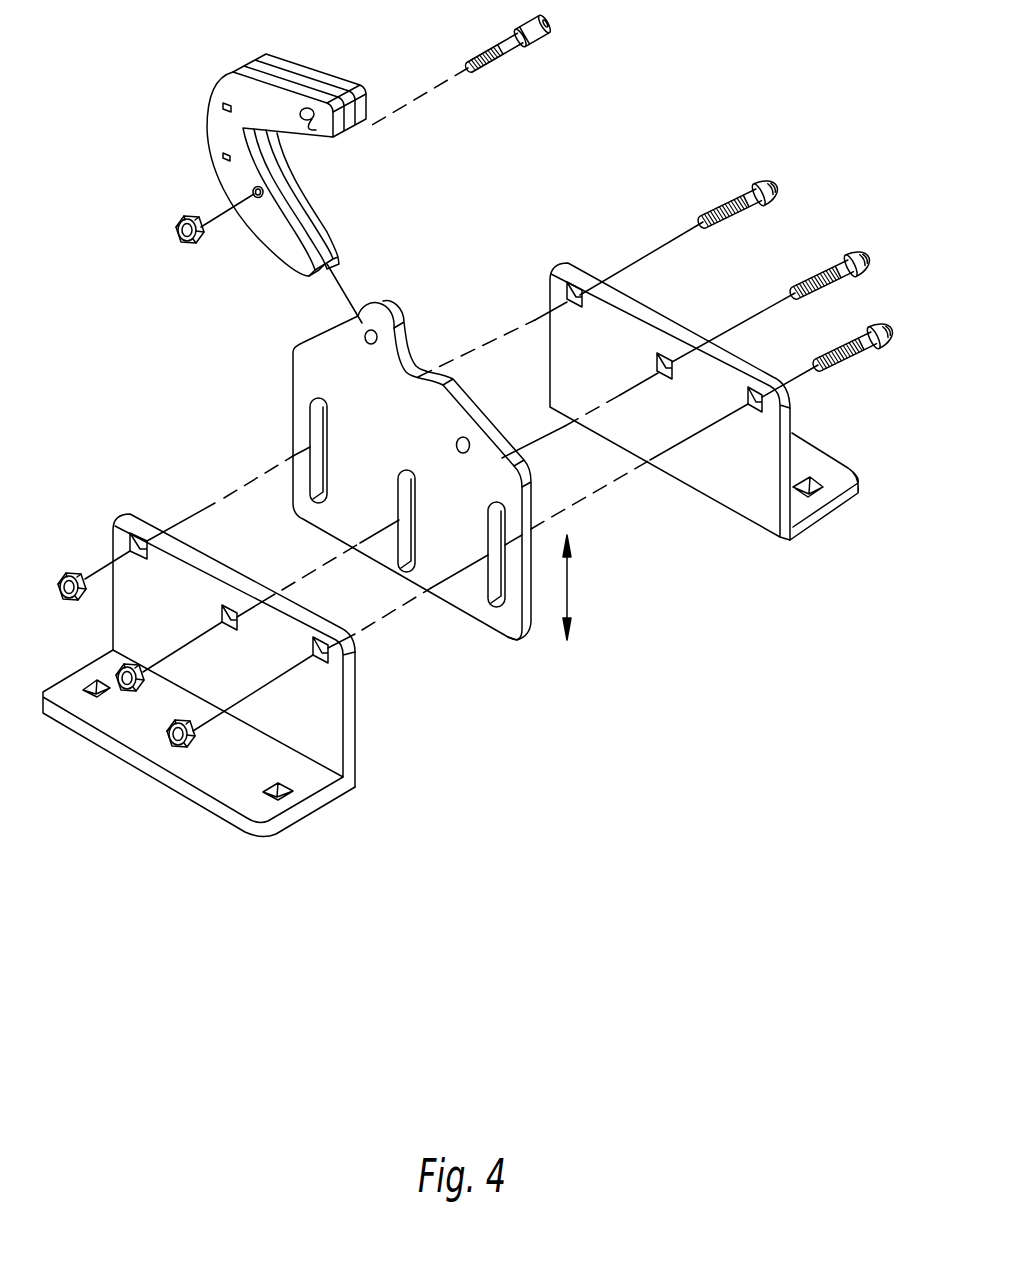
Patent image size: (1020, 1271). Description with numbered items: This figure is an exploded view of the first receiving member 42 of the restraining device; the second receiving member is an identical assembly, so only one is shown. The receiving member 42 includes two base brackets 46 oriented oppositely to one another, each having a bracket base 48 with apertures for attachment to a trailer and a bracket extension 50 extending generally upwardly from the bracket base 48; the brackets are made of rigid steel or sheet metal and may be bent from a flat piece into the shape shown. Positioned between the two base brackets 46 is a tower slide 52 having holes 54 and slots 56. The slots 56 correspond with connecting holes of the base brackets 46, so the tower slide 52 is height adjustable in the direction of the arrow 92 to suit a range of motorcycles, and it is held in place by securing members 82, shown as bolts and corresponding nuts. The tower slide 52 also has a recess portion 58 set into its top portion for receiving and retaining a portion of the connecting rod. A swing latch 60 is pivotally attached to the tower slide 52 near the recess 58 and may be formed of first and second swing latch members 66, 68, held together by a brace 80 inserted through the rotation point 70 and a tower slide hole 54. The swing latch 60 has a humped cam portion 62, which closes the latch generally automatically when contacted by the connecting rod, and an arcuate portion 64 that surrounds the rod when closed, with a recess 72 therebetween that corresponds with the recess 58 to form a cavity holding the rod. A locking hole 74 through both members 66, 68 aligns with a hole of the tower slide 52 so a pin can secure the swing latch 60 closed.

The first receiving member 42 is at (613, 75).
The base brackets 46 is at (235, 675).
The bracket base 48 is at (108, 666).
The bracket extension 50 is at (353, 711).
The tower slide 52 is at (376, 470).
The holes 54 is at (365, 338).
The slots 56 is at (316, 440).
The recess portion 58 is at (412, 362).
The swing latch 60 is at (294, 151).
The cam portion 62 is at (318, 204).
The arcuate portion 64 is at (231, 73).
The first swing latch member 66 is at (282, 240).
The second swing latch member 68 is at (362, 91).
The rotation point 70 is at (252, 192).
The recess 72 is at (247, 150).
The locking hole 74 is at (303, 167).
The brace 80 is at (500, 42).
The securing members 82 is at (745, 190).
The arrow 92 is at (571, 587).